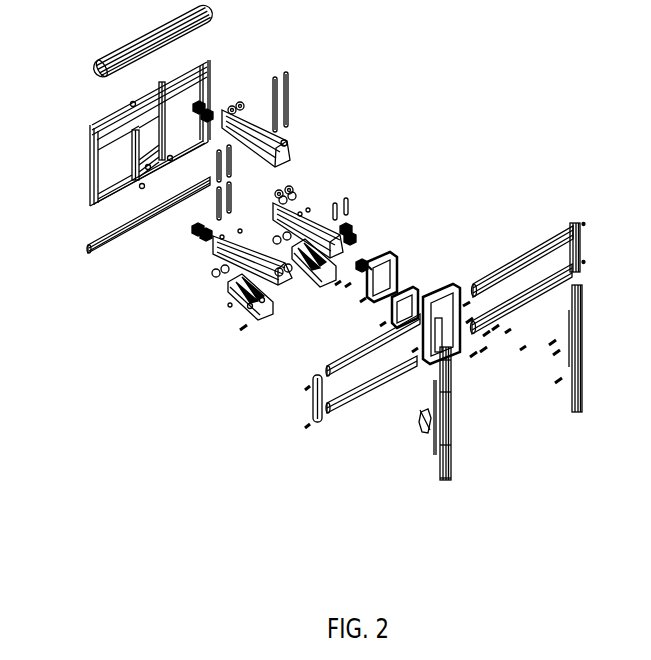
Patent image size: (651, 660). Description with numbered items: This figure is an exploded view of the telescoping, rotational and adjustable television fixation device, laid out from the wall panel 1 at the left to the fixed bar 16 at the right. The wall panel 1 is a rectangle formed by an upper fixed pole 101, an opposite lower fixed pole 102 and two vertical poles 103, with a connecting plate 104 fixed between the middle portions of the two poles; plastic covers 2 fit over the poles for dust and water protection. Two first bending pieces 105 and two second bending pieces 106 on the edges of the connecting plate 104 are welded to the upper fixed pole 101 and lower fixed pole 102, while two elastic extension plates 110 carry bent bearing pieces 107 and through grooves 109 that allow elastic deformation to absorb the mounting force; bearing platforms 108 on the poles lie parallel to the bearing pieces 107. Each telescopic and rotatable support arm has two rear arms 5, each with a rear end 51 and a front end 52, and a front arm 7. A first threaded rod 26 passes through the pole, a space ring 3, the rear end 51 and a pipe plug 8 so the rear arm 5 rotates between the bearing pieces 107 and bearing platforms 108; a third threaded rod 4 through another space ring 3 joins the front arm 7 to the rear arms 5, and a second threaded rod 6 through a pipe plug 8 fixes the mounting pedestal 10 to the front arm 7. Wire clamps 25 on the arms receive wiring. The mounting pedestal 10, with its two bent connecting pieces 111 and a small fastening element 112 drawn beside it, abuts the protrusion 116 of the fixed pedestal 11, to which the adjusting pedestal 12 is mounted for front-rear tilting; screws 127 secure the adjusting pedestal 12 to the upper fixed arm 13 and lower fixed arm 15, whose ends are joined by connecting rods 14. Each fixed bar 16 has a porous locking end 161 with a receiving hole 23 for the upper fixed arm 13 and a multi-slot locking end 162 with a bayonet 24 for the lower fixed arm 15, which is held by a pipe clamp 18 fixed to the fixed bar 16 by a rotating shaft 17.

The wall panel 1 is at (134, 145).
The plastic cover 2 is at (138, 45).
The space ring 3 is at (297, 178).
The third threaded rod 4 is at (291, 100).
The rear arm 5 is at (287, 127).
The second threaded rod 6 is at (350, 208).
The front arm 7 is at (303, 207).
The pipe plug 8 is at (190, 238).
The mounting pedestal 10 is at (407, 257).
The fixed pedestal 11 is at (378, 296).
The adjusting pedestal 12 is at (470, 337).
The upper fixed arm 13 is at (512, 264).
The connecting rod 14 is at (311, 398).
The lower fixed arm 15 is at (352, 407).
The fixed bar 16 is at (474, 419).
The rotating shaft 17 is at (428, 456).
The pipe clamp 18 is at (420, 426).
The receiving hole 23 is at (551, 346).
The bayonet 24 is at (556, 383).
The wire clamp 25 is at (238, 302).
The first threaded rod 26 is at (237, 199).
The rear end 51 is at (237, 103).
The front end 52 is at (287, 141).
The upper fixed pole 101 is at (110, 113).
The lower fixed pole 102 is at (110, 207).
The vertical pole 103 is at (89, 162).
The connecting plate 104 is at (132, 142).
The first bending piece 105 is at (156, 93).
The second bending piece 106 is at (142, 189).
The bearing piece 107 is at (160, 80).
The bearing platform 108 is at (170, 160).
The through groove 109 is at (132, 102).
The elastic extension plate 110 is at (148, 169).
The connecting piece 111 is at (361, 303).
The bolt 112 is at (370, 268).
The protrusion 116 is at (432, 296).
The screw 127 is at (500, 328).
The porous locking end 161 is at (452, 380).
The multi-slot locking end 162 is at (452, 462).